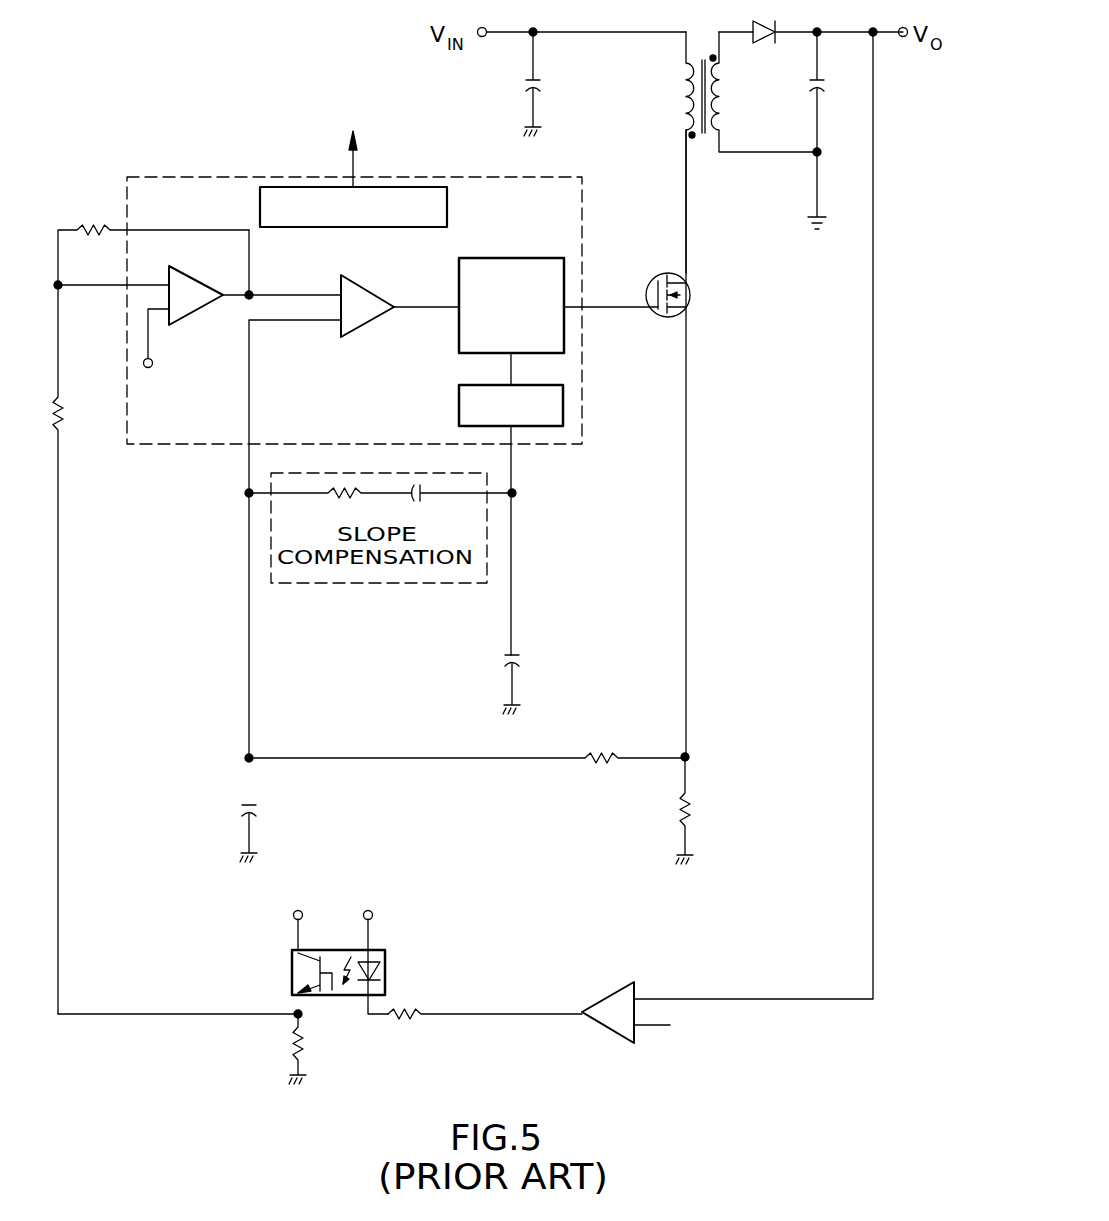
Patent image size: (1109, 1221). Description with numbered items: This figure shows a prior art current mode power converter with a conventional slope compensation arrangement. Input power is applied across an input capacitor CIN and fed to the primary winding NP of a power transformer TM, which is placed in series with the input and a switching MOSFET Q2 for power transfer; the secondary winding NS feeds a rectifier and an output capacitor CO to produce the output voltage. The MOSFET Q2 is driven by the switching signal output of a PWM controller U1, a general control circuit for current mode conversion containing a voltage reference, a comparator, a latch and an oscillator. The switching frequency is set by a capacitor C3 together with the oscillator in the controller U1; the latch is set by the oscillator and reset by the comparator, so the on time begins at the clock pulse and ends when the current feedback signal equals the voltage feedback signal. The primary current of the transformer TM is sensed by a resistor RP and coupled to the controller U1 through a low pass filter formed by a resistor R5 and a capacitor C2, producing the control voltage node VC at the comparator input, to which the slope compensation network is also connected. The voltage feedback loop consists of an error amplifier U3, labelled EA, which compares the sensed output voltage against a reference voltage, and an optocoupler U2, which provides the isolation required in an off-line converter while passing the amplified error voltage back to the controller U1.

The input capacitor CIN is at (555, 84).
The power transformer TM is at (732, 137).
The primary turn ratio of TM NP is at (671, 152).
The secondary turn ratio of TM NS is at (763, 92).
The output capacitor CO is at (831, 130).
The PWM controller U1 is at (358, 429).
The switching MOSFET Q2 is at (687, 443).
The capacitor C3 is at (530, 681).
The control voltage node VC is at (240, 755).
The resistor R5 is at (467, 745).
The resistor RP is at (702, 810).
The capacitor C2 is at (268, 830).
The optocoupler U2 is at (244, 998).
The error amplifier U3 is at (557, 1028).
The error amplifier EA is at (616, 1031).